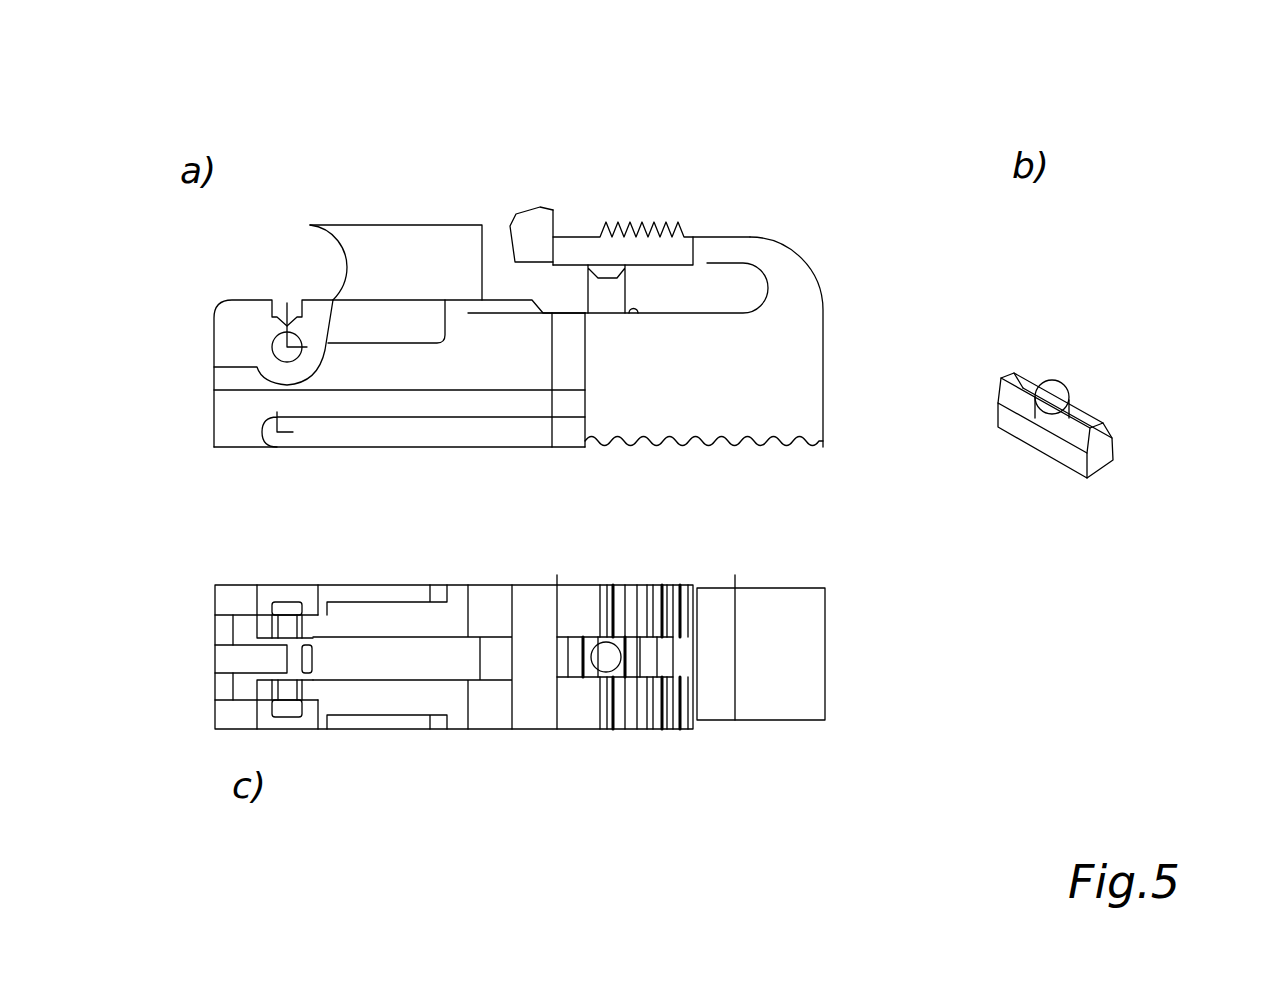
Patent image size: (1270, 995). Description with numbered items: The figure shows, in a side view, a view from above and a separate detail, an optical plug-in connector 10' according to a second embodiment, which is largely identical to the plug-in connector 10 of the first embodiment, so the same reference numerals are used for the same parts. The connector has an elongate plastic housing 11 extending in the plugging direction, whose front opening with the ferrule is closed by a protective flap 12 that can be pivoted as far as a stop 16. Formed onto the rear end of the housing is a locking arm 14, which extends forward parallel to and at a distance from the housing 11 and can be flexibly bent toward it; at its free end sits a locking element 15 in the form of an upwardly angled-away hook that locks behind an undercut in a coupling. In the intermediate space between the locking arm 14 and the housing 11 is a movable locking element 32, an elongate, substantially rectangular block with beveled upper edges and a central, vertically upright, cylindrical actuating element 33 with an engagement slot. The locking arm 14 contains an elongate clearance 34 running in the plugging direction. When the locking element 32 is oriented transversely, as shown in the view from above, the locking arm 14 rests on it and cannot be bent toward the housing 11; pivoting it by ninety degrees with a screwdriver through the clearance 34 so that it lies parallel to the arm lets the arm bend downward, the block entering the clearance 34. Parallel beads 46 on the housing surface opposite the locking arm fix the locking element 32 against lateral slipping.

The plug-in connector 10 is at (770, 720).
The plug-in connector 10' is at (782, 255).
The housing 11 is at (463, 363).
The protective flap 12 is at (233, 332).
The locking arm 14 is at (640, 236).
The locking element 15 is at (538, 218).
The stop 16 is at (375, 238).
The locking element 32 is at (607, 292).
The actuating element 33 is at (605, 648).
The clearance 34 is at (690, 708).
The beads 46 is at (642, 298).